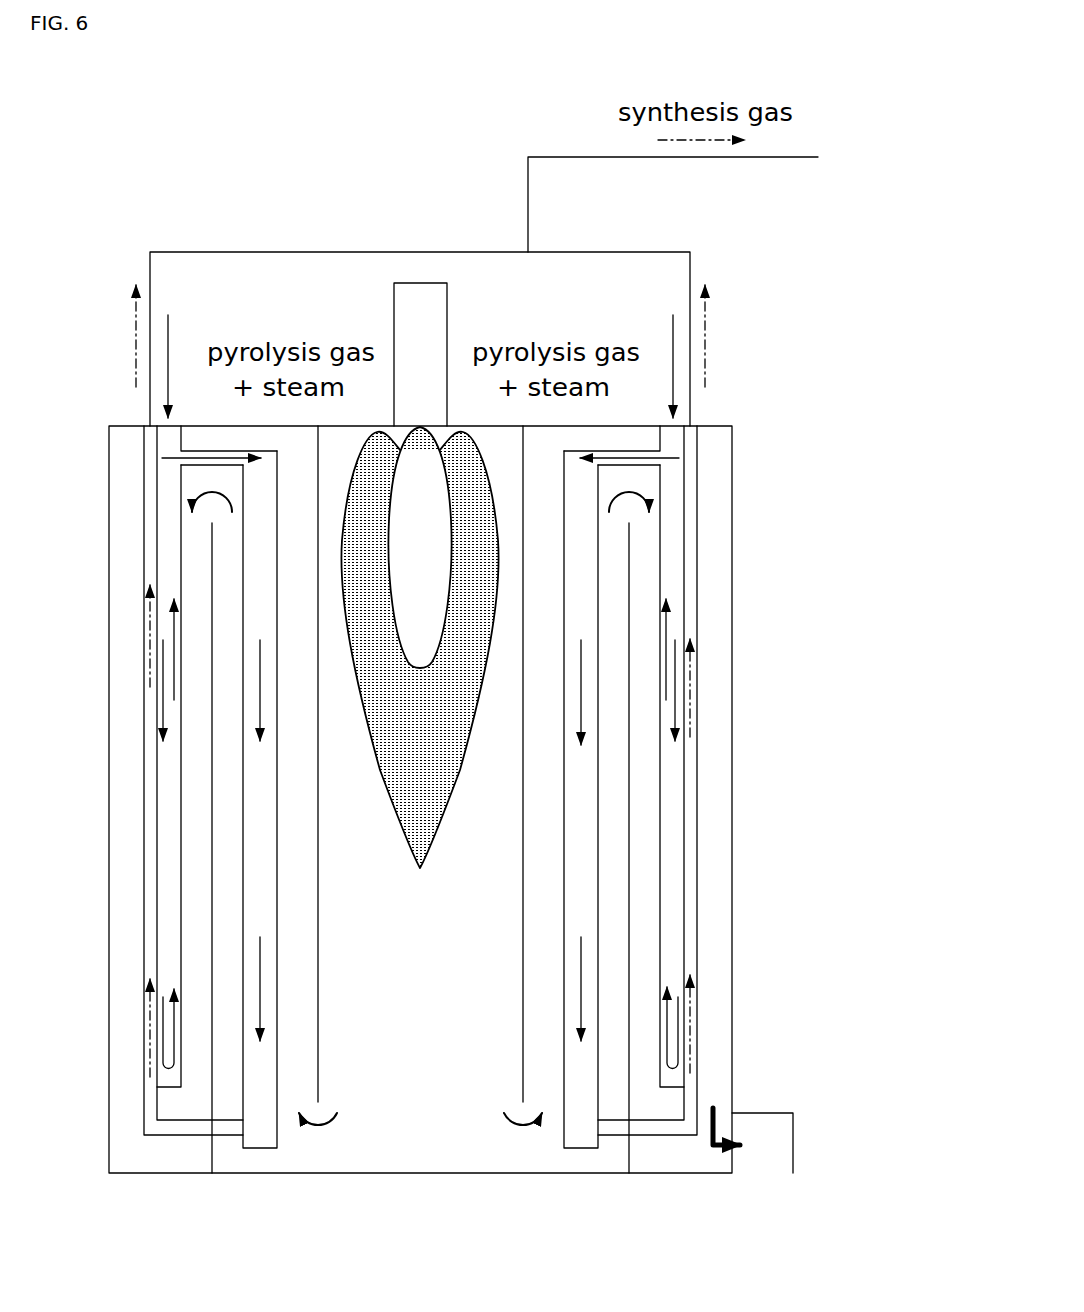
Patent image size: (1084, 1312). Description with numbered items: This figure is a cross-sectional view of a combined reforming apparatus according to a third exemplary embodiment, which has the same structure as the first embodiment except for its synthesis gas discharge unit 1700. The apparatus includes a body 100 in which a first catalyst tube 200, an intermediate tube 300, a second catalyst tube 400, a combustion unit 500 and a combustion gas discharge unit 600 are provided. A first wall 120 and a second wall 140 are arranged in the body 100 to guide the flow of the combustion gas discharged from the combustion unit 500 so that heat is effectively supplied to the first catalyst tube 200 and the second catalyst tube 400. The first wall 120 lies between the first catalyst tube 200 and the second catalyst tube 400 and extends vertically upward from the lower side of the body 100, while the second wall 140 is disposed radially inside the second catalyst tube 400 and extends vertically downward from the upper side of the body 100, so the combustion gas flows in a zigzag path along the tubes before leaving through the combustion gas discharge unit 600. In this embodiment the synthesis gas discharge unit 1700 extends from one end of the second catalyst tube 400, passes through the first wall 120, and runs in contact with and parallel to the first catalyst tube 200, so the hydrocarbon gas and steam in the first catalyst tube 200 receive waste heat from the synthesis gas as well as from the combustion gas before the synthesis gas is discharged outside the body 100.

The body 100 is at (736, 633).
The first wall 120 is at (212, 907).
The second wall 140 is at (318, 693).
The first catalyst tube 200 is at (673, 777).
The intermediate tube 300 is at (189, 469).
The second catalyst tube 400 is at (242, 792).
The combustion unit 500 is at (391, 277).
The combustion gas discharge unit 600 is at (797, 1105).
The synthesis gas discharge unit 1700 is at (706, 530).